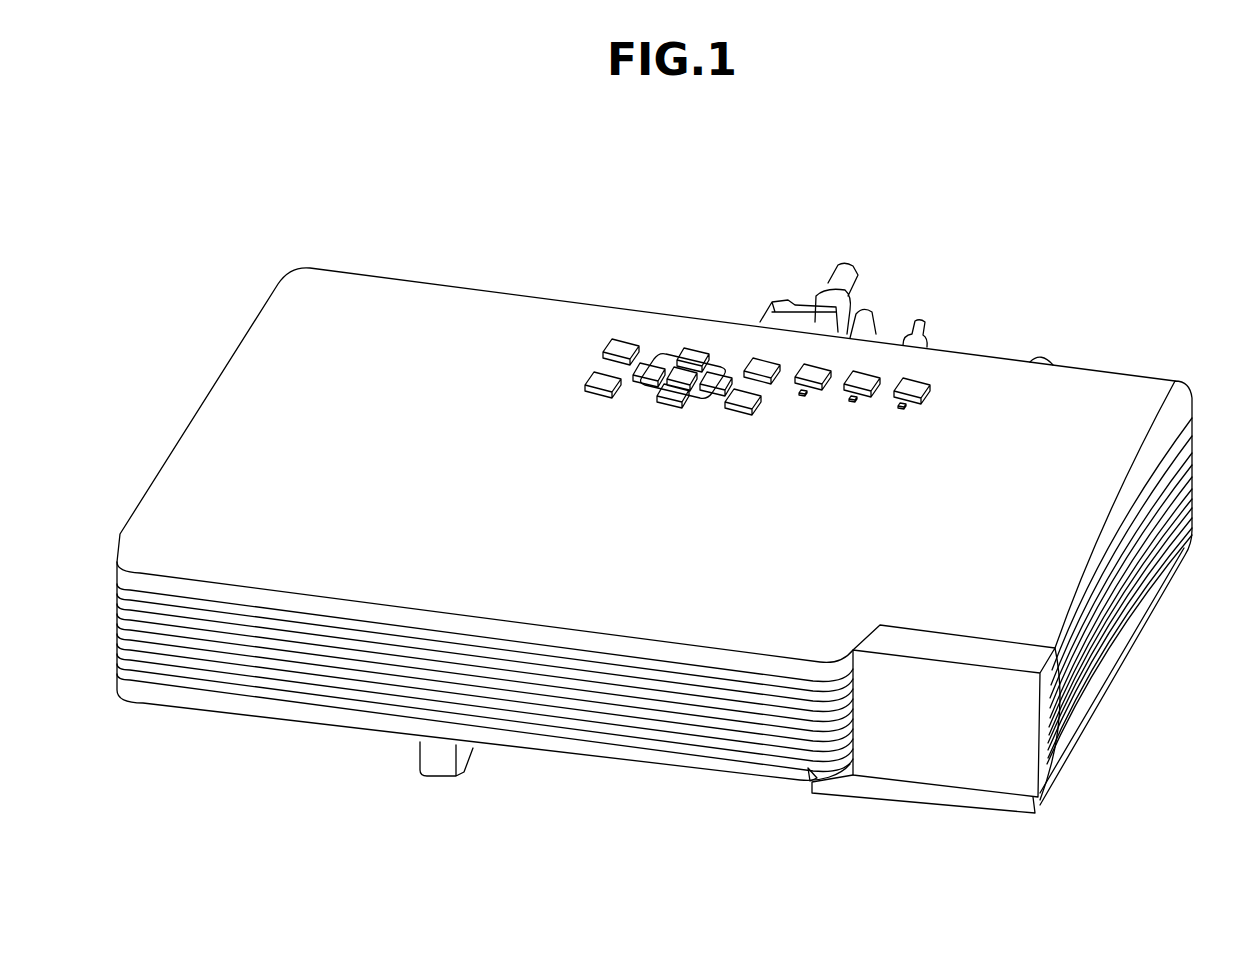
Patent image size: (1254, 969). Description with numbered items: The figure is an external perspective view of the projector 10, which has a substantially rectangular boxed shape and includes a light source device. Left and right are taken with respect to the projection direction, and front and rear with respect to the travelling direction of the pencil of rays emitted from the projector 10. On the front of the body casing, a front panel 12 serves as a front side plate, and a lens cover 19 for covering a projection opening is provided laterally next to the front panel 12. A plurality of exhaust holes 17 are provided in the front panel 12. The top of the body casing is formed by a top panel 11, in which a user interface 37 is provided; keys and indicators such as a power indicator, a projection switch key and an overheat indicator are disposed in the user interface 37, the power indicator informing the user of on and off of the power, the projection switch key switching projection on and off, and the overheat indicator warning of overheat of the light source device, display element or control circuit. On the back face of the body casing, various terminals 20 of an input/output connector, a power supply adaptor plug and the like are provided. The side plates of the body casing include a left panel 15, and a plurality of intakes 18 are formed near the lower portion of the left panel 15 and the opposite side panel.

The projector 10 is at (618, 232).
The top panel 11 is at (415, 318).
The front panel 12 is at (550, 737).
The left panel 15 is at (1125, 642).
The exhaust holes 17 is at (648, 757).
The intakes 18 is at (1153, 562).
The lens cover 19 is at (980, 767).
The terminals 20 is at (880, 290).
The user interface 37 is at (705, 332).